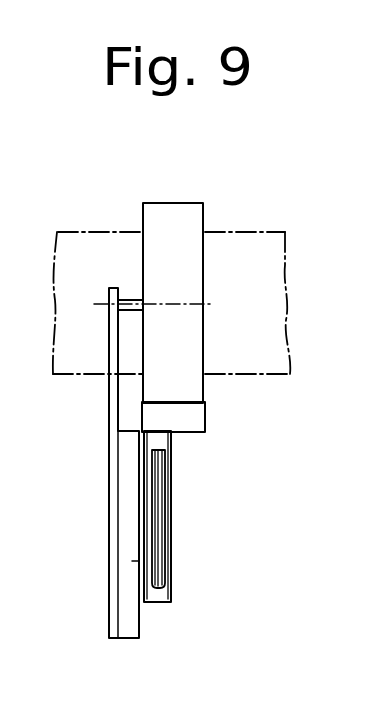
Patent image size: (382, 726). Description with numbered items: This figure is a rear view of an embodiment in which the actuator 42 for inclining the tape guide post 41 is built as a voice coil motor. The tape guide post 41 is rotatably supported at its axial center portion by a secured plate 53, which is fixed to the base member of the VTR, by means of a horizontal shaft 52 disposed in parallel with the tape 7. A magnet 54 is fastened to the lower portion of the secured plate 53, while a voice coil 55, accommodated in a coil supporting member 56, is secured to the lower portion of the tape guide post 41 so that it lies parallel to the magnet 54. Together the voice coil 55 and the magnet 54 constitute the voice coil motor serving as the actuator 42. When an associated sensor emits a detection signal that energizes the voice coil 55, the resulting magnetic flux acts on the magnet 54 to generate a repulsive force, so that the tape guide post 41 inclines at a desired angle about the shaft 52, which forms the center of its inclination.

The tape 7 is at (268, 272).
The tape guide post 41 is at (204, 232).
The actuator 42 is at (225, 516).
The horizontal shaft 52 is at (134, 298).
The secured plate 53 is at (108, 410).
The magnet 54 is at (171, 556).
The voice coil 55 is at (171, 520).
The coil supporting member 56 is at (171, 464).